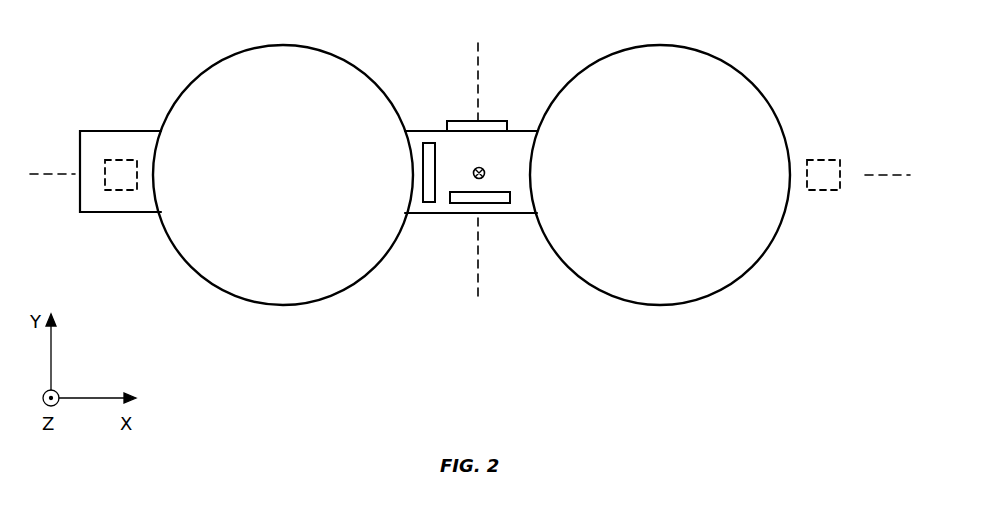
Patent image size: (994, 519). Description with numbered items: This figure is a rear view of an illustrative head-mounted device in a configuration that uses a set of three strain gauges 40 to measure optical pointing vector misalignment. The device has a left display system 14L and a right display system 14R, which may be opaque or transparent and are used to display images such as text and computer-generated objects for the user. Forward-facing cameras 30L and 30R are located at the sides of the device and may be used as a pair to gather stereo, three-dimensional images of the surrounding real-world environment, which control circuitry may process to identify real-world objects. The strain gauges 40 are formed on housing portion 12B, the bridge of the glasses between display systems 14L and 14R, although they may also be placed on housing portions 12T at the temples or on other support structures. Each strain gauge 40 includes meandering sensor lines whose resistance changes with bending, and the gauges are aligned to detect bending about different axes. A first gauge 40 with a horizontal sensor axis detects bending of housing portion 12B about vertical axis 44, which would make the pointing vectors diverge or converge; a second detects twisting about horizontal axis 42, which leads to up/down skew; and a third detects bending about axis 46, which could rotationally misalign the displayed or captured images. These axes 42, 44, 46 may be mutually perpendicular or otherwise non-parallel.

The housing portion 12B is at (419, 140).
The housing portions 12T is at (124, 131).
The display system 14L is at (285, 306).
The display system 14R is at (667, 306).
The camera 30L is at (103, 170).
The camera 30R is at (840, 170).
The strain gauges 40 is at (457, 124).
The horizontal axis 42 is at (52, 178).
The vertical axis 44 is at (480, 43).
The axis 46 is at (483, 168).